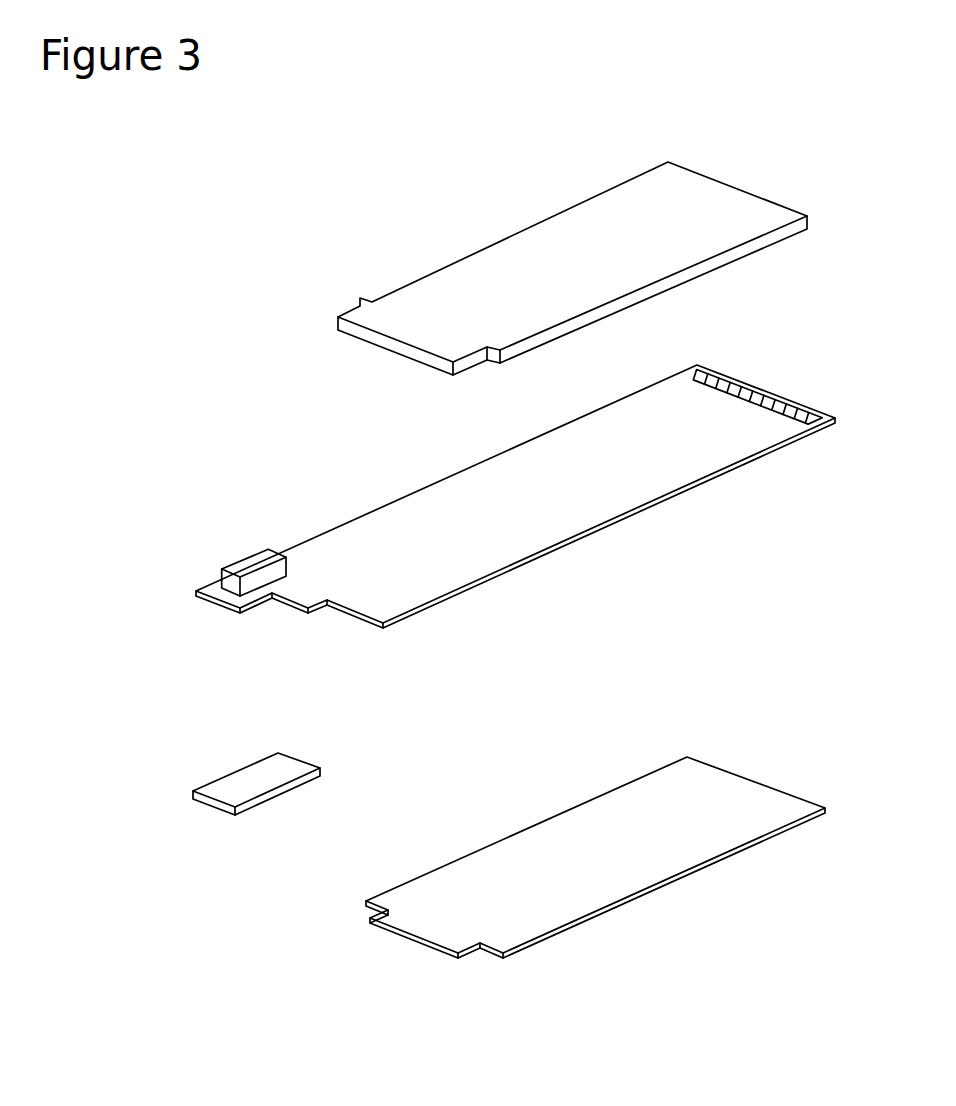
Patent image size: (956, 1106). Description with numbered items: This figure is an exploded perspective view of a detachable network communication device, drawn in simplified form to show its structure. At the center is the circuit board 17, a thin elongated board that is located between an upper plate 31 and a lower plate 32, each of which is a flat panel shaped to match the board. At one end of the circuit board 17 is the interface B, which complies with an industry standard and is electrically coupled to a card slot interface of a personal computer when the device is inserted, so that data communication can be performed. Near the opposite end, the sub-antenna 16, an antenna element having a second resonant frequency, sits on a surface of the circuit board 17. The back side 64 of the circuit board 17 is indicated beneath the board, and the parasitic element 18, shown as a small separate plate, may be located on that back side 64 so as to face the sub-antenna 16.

The plate 31 is at (742, 202).
The back side 64 is at (515, 515).
The circuit board 17 is at (772, 437).
The interface B is at (762, 393).
The sub-antenna 16 is at (258, 565).
The parasitic element 18 is at (252, 772).
The plate 32 is at (745, 788).